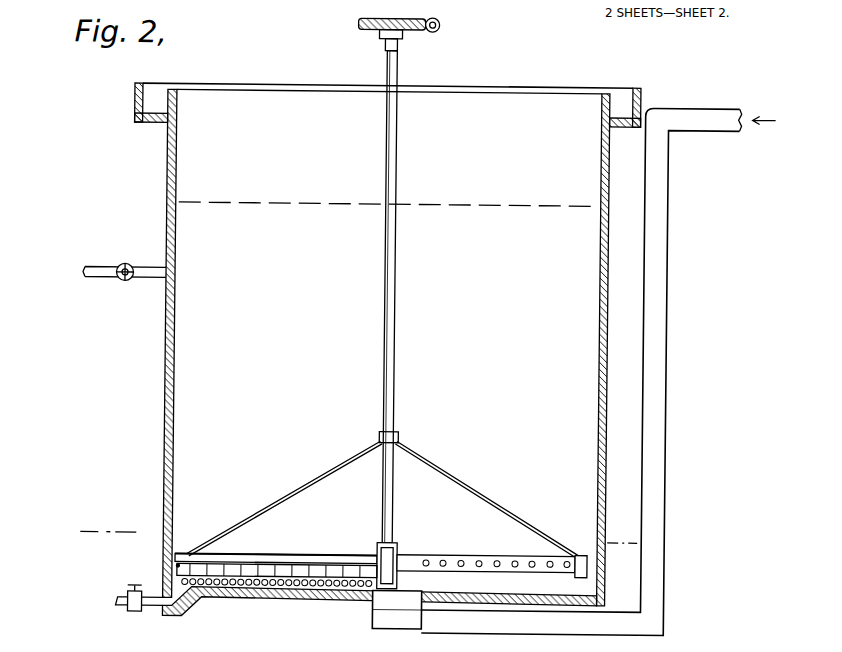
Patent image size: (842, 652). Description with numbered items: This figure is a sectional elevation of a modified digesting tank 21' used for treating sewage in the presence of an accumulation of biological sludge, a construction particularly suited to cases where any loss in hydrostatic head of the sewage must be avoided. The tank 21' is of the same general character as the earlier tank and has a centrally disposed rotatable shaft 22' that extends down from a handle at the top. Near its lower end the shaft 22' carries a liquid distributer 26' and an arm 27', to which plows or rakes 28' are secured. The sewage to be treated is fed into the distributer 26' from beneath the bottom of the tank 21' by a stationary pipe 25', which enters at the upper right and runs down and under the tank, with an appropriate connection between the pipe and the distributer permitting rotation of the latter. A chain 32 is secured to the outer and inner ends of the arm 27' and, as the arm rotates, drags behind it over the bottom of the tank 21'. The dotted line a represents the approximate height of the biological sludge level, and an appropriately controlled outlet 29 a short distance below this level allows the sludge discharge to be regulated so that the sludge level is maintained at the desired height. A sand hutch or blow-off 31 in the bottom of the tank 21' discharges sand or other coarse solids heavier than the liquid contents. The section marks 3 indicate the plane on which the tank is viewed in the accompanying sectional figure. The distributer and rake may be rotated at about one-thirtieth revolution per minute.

The digesting tank 21' is at (367, 352).
The sludge level a is at (323, 202).
The outlet 29 is at (145, 279).
The rotatable shaft 22' is at (378, 280).
The arm 27' is at (377, 515).
The liquid distributer 26' is at (492, 547).
The plows or rakes 28' is at (276, 604).
The chain 32 is at (305, 585).
The sand hutch or blow-off 31 is at (190, 601).
The pipe 25' is at (574, 379).
The section line 3 is at (114, 490).